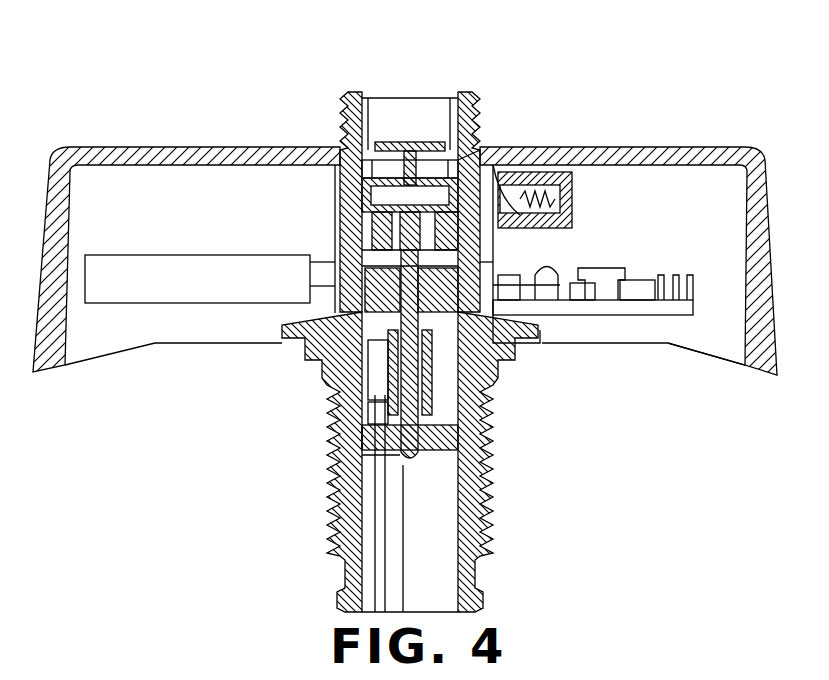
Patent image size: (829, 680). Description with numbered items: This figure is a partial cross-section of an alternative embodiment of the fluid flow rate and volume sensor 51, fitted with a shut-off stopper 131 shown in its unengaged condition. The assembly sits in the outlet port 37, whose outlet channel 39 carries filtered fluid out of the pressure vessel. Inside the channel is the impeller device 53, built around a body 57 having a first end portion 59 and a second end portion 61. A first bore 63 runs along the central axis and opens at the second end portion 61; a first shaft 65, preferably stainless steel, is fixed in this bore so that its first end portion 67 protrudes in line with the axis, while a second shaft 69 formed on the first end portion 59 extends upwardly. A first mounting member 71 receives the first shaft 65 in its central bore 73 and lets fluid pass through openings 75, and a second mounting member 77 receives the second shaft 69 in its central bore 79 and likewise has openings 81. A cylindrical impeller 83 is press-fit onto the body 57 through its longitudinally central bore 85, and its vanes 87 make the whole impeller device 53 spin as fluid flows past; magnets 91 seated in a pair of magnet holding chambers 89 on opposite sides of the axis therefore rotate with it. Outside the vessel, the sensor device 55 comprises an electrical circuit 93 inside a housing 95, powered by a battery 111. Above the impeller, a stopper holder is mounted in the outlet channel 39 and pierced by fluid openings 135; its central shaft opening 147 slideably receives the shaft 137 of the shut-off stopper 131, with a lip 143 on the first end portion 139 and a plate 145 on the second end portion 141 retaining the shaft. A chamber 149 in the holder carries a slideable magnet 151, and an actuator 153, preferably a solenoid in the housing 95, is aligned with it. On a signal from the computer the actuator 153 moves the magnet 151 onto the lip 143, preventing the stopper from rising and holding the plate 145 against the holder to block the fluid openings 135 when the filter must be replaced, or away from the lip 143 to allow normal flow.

The outlet port 37 is at (470, 115).
The outlet channel 39 is at (412, 110).
The fluid flow rate and volume sensor 51 is at (574, 132).
The impeller device 53 is at (330, 345).
The sensor device 55 is at (640, 324).
The body 57 is at (500, 385).
The first end portion 59 is at (493, 262).
The second end portion 61 is at (470, 392).
The first bore 63 is at (393, 462).
The first shaft 65 is at (423, 462).
The first end portion 67 is at (492, 468).
The second shaft 69 is at (372, 270).
The first mounting member 71 is at (462, 440).
The central bore 73 is at (405, 462).
The openings 75 is at (362, 447).
The second mounting member 77 is at (372, 222).
The central bore 79 is at (512, 342).
The openings 81 is at (366, 240).
The impeller 83 is at (386, 400).
The longitudinally central bore 85 is at (370, 428).
The vanes 87 is at (372, 370).
The magnet holding chambers 89 is at (335, 285).
The magnet 91 is at (310, 264).
The electrical circuit 93 is at (645, 268).
The housing 95 is at (130, 147).
The battery 111 is at (155, 270).
The shut-off stopper 131 is at (366, 148).
The fluid openings 135 is at (348, 150).
The shaft 137 is at (432, 140).
The first end portion 139 is at (362, 190).
The second end portion 141 is at (340, 125).
The lip 143 is at (408, 160).
The plate 145 is at (448, 140).
The central shaft opening 147 is at (478, 125).
The chamber 149 is at (496, 165).
The magnet 151 is at (512, 232).
The actuator 153 is at (575, 155).